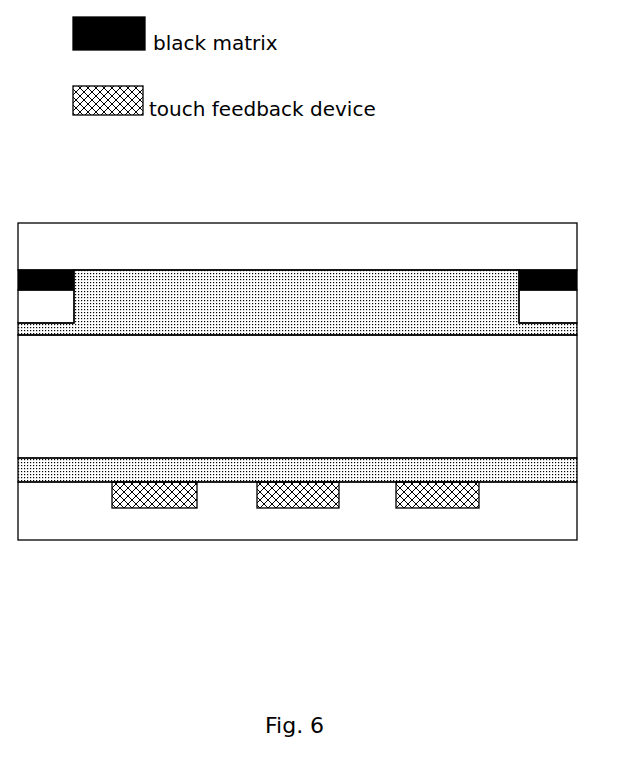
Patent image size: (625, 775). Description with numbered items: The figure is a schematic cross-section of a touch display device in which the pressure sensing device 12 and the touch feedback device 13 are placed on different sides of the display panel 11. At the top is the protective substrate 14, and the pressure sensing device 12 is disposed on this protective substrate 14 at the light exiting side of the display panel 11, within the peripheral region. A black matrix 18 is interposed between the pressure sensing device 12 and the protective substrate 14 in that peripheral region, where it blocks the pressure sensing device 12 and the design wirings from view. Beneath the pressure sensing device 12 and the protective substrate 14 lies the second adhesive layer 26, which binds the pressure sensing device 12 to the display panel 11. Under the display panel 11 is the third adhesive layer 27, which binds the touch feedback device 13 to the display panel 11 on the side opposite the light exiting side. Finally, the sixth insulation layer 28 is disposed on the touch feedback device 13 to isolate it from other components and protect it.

The display panel 11 is at (355, 418).
The pressure sensing device 12 is at (533, 305).
The touch feedback device 13 is at (300, 495).
The protective substrate 14 is at (215, 240).
The black matrix 18 is at (45, 270).
The second adhesive layer 26 is at (349, 305).
The third adhesive layer 27 is at (227, 470).
The sixth insulation layer 28 is at (521, 500).